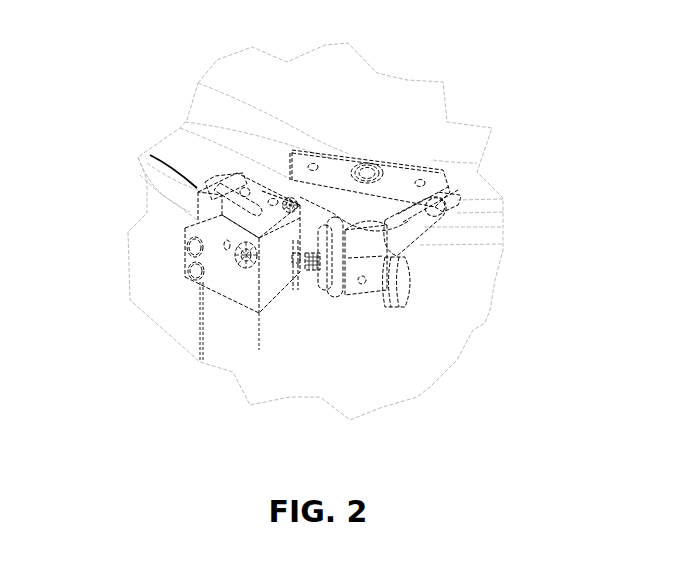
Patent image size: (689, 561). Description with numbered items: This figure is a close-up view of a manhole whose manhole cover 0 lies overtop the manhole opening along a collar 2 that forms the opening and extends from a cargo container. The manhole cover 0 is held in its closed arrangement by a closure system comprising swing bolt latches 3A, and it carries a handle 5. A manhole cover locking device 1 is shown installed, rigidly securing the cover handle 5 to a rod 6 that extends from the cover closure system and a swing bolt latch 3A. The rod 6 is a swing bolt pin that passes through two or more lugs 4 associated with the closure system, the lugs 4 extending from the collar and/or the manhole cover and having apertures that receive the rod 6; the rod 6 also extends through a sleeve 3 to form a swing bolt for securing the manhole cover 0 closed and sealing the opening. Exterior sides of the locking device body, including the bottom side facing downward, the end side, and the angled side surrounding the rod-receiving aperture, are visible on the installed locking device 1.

The manhole cover 0 is at (315, 102).
The swing bolt latch 3A is at (378, 133).
The handle 5 is at (170, 210).
The manhole cover locking device 1 is at (175, 304).
The collar 2 is at (293, 360).
The sleeve 3 is at (368, 272).
The rod 6 is at (415, 278).
The lug 4 is at (390, 305).